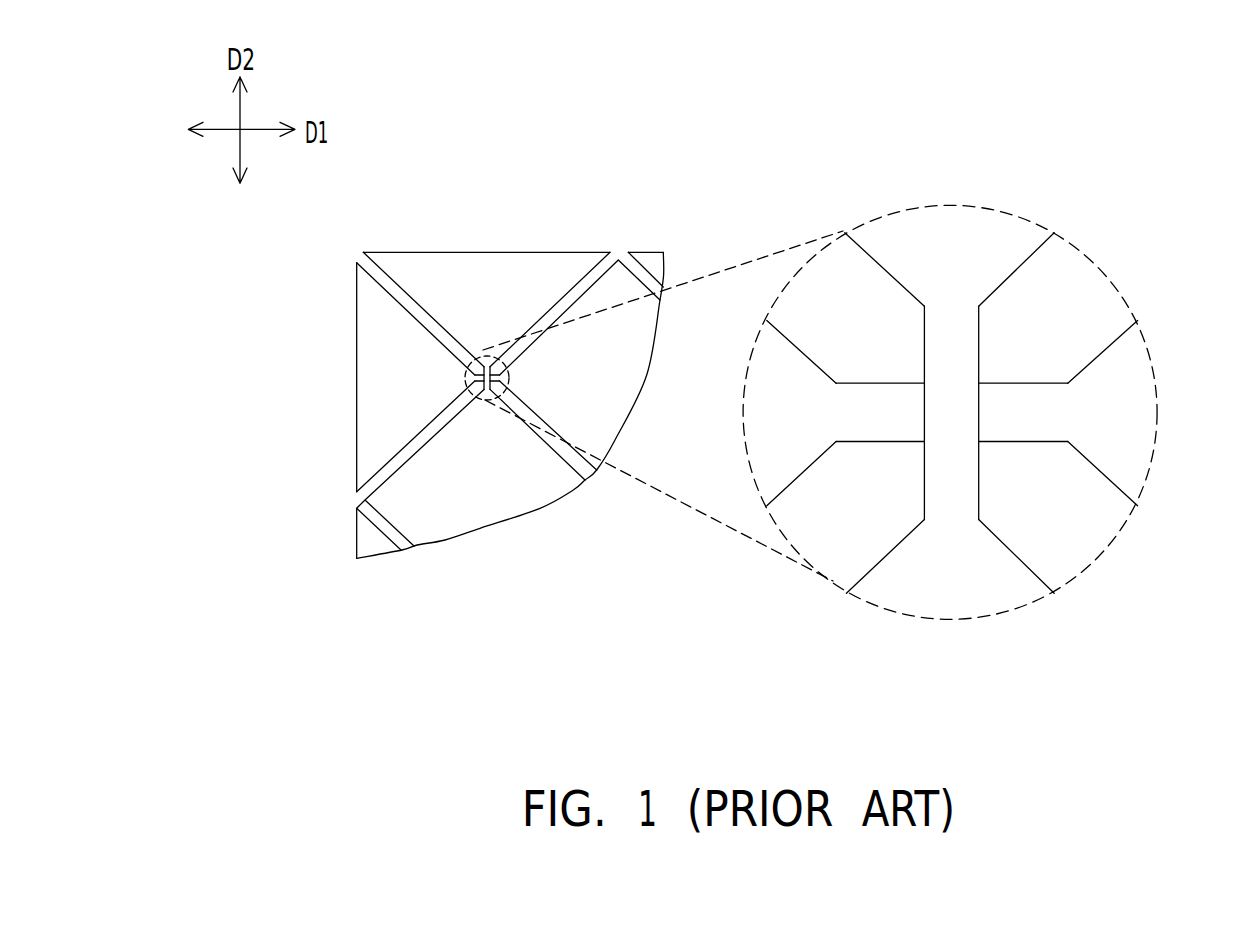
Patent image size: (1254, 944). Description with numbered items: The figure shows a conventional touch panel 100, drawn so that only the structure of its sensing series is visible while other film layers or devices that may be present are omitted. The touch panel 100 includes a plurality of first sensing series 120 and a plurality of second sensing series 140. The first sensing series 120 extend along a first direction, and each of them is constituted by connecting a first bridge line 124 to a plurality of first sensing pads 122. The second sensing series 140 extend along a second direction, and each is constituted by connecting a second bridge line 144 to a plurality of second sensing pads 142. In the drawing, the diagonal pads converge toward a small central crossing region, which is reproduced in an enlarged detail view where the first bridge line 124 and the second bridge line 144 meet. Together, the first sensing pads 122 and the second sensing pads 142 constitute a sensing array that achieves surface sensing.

The touch panel 100 is at (645, 692).
The first sensing series 120 is at (533, 630).
The first sensing pads 122 is at (389, 408).
The first bridge line 124 is at (478, 388).
The second sensing series 140 is at (563, 147).
The second sensing pads 142 is at (430, 291).
The second bridge line 144 is at (511, 351).